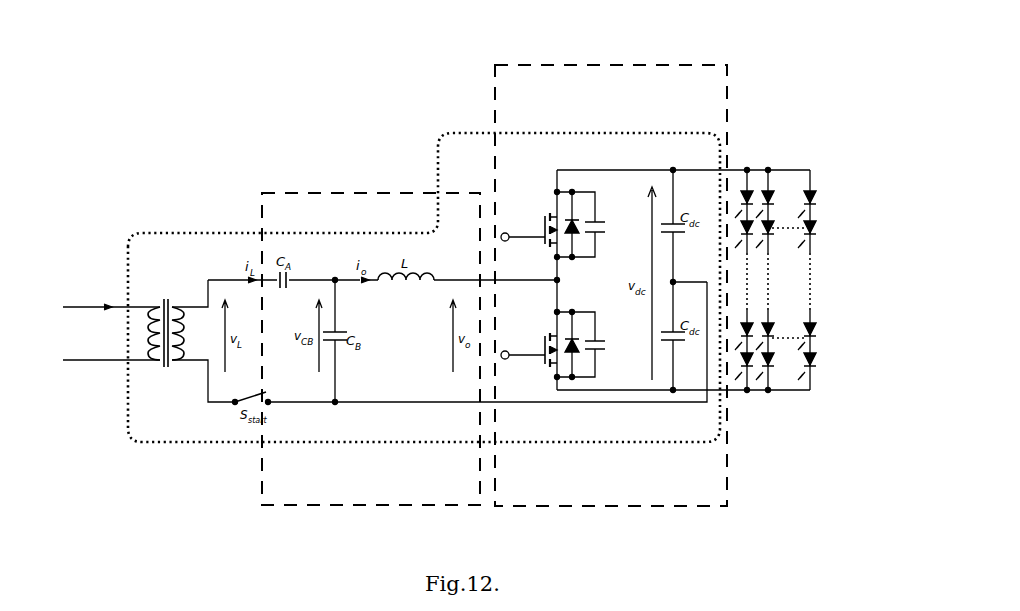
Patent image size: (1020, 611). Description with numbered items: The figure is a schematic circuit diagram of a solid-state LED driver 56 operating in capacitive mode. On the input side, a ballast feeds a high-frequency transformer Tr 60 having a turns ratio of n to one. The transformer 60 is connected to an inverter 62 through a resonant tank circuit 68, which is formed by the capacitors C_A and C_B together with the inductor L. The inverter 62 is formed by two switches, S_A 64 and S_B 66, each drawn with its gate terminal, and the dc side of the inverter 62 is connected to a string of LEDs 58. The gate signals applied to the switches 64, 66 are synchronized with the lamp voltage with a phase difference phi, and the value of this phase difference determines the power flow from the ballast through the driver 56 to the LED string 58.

The LED driver 56 is at (650, 132).
The string of LEDs 58 is at (823, 203).
The high-frequency transformer Tr 60 is at (166, 366).
The inverter 62 is at (565, 64).
The switch S_A 64 is at (549, 202).
The switch S_B 66 is at (551, 359).
The resonant tank circuit 68 is at (327, 188).